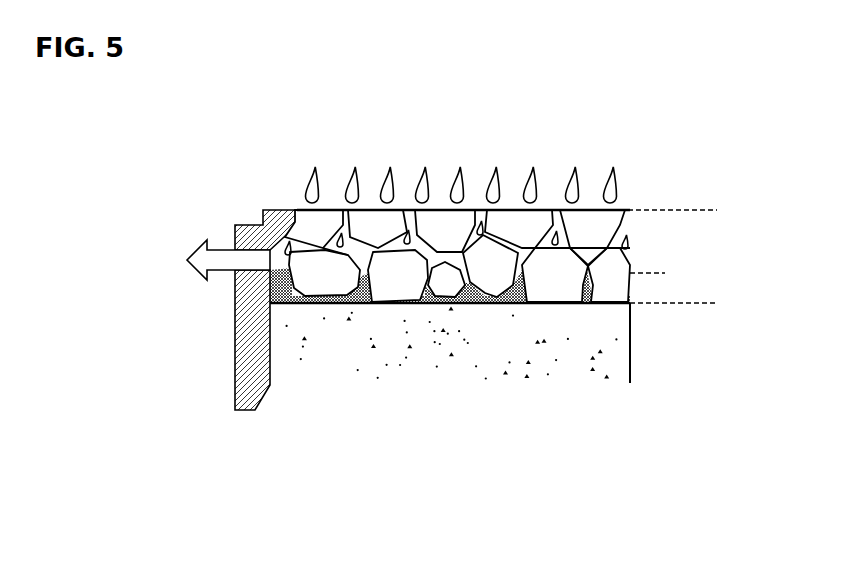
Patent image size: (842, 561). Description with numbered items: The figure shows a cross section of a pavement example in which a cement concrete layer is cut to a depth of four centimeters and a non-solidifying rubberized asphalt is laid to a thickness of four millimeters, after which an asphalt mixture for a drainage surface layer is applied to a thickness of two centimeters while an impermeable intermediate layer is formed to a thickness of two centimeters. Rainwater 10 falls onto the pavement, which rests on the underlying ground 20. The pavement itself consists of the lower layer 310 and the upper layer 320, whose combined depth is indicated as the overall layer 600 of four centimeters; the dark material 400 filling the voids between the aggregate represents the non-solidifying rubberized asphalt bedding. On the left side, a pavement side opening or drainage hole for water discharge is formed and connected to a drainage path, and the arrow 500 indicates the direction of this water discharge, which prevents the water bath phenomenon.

The rainwater / water drops 10 is at (298, 158).
The soil ground 20 is at (426, 353).
The lower aggregate layer (2cm) 310 is at (657, 273).
The upper aggregate layer (2cm) 320 is at (657, 273).
The filler / binder material 400 is at (362, 301).
The drainage flow direction 500 is at (205, 260).
The total pavement layer (4cm) 600 is at (715, 303).